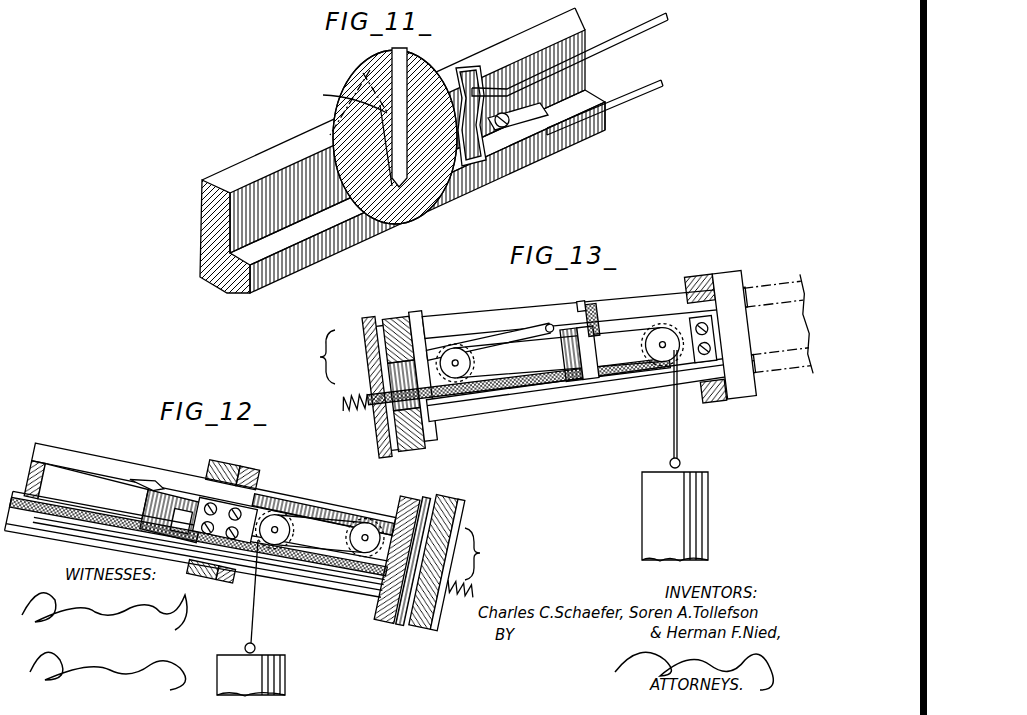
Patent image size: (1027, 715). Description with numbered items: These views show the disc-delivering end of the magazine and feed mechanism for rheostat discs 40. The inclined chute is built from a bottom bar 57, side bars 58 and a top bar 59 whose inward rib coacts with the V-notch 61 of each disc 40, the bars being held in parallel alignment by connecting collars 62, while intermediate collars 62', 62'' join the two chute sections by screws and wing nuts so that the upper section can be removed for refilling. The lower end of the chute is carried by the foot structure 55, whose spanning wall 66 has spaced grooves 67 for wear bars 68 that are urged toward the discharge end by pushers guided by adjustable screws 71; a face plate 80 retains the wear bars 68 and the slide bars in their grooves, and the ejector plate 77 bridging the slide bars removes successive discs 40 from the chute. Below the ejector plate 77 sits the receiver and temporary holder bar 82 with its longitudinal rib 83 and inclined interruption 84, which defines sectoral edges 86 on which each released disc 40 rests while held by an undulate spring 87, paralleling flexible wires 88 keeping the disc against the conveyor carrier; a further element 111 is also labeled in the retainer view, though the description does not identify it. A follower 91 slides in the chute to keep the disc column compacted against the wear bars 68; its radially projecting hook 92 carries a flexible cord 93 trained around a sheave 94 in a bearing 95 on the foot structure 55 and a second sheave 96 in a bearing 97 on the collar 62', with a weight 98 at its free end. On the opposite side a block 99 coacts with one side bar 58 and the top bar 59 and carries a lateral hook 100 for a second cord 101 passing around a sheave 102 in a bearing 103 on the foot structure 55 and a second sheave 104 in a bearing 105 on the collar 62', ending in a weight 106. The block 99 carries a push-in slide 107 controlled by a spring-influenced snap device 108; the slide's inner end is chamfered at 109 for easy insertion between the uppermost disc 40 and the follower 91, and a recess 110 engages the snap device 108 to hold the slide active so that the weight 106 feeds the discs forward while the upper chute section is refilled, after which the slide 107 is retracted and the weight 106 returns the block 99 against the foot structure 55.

In FIG. 11, the rheostat disc 40 is at (367, 77).
In FIG. 13, the rheostat disc 40 is at (372, 412).
In FIG. 12, the rheostat disc 40 is at (150, 497).
In FIG. 13, the foot structure 55 is at (316, 357).
In FIG. 12, the foot structure 55 is at (482, 554).
In FIG. 13, the bottom bar 57 is at (640, 392).
In FIG. 12, the bottom bar 57 is at (70, 530).
In FIG. 13, the side bar 58 is at (535, 402).
In FIG. 12, the side bar 58 is at (38, 478).
In FIG. 13, the top bar 59 is at (440, 326).
In FIG. 12, the top bar 59 is at (75, 457).
In FIG. 11, the V-notch 61 is at (400, 72).
In FIG. 13, the connecting collar 62 is at (424, 353).
In FIG. 12, the connecting collar 62 is at (425, 551).
In FIG. 13, the intermediate collar 62' is at (705, 327).
In FIG. 12, the intermediate collar 62' is at (236, 513).
In FIG. 13, the intermediate collar 62'' is at (764, 325).
In FIG. 12, the intermediate collar 62'' is at (211, 512).
In FIG. 12, the spanning wall 66 is at (452, 506).
In FIG. 13, the groove 67 is at (363, 318).
In FIG. 13, the wear bar 68 is at (385, 360).
In FIG. 12, the wear bar 68 is at (417, 632).
In FIG. 13, the adjustable screw 71 is at (356, 400).
In FIG. 12, the adjustable screw 71 is at (462, 606).
In FIG. 13, the ejector plate 77 is at (385, 318).
In FIG. 12, the ejector plate 77 is at (466, 512).
In FIG. 13, the face plate 80 is at (410, 448).
In FIG. 12, the face plate 80 is at (400, 512).
In FIG. 11, the bar 82 is at (212, 222).
In FIG. 11, the longitudinal rib 83 is at (273, 267).
In FIG. 11, the inclined interruption 84 is at (387, 207).
In FIG. 11, the sectoral edge 86 is at (457, 160).
In FIG. 11, the undulate spring 87 is at (490, 133).
In FIG. 11, the flexible wire 88 is at (632, 38).
In FIG. 12, the follower 91 is at (93, 492).
In FIG. 12, the hook 92 is at (135, 466).
In FIG. 12, the flexible cord 93 is at (340, 512).
In FIG. 12, the sheave 94 is at (370, 520).
In FIG. 12, the bearing 95 is at (372, 567).
In FIG. 12, the second sheave 96 is at (282, 562).
In FIG. 12, the bearing 97 is at (252, 598).
In FIG. 12, the weight 98 is at (285, 658).
In FIG. 13, the block 99 is at (520, 338).
In FIG. 13, the lateral hook 100 is at (550, 325).
In FIG. 13, the flexible cord 101 is at (475, 340).
In FIG. 13, the sheave 102 is at (455, 348).
In FIG. 13, the bearing 103 is at (463, 380).
In FIG. 13, the second sheave 104 is at (640, 325).
In FIG. 13, the bearing 105 is at (678, 326).
In FIG. 13, the weight 106 is at (675, 516).
In FIG. 13, the push-in slide 107 is at (580, 316).
In FIG. 13, the snap device 108 is at (596, 325).
In FIG. 13, the chamfer 109 is at (585, 397).
In FIG. 13, the recess 110 is at (630, 392).
In FIG. 11, the guide 111 is at (340, 99).